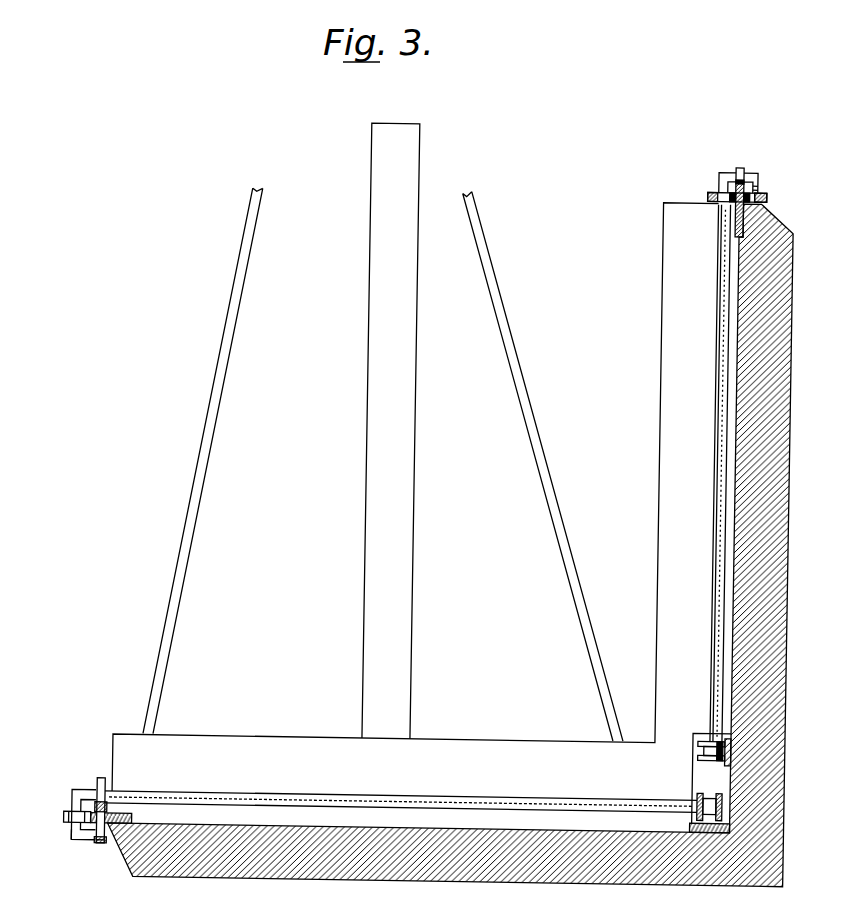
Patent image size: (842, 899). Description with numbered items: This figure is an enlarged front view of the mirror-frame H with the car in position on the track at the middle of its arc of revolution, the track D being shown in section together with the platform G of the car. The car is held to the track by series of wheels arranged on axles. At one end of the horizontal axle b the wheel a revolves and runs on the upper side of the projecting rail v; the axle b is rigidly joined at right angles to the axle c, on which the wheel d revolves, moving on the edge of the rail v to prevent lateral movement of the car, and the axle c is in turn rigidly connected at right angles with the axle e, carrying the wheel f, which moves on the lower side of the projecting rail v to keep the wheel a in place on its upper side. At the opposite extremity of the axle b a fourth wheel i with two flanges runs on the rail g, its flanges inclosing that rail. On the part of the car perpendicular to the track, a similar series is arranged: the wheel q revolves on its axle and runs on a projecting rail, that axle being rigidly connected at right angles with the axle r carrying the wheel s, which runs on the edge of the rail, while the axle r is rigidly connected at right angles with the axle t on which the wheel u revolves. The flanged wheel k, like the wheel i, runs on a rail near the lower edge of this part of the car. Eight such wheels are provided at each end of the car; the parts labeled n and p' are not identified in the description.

The wheel a is at (102, 778).
The axle b is at (156, 791).
The axle c is at (82, 805).
The wheel d is at (65, 818).
The axle e is at (77, 840).
The wheel f is at (101, 844).
The rail g is at (712, 824).
The wheel i is at (712, 788).
The wheel k is at (709, 754).
The nut n is at (726, 742).
The screw rod p' is at (709, 472).
The wheel q is at (699, 188).
The axle r is at (740, 165).
The wheel s is at (733, 157).
The axle t is at (750, 179).
The wheel u is at (759, 188).
The projecting rail v is at (134, 818).
The platform of the car G is at (415, 497).
The mirror-frame H is at (391, 431).
The track D is at (450, 540).